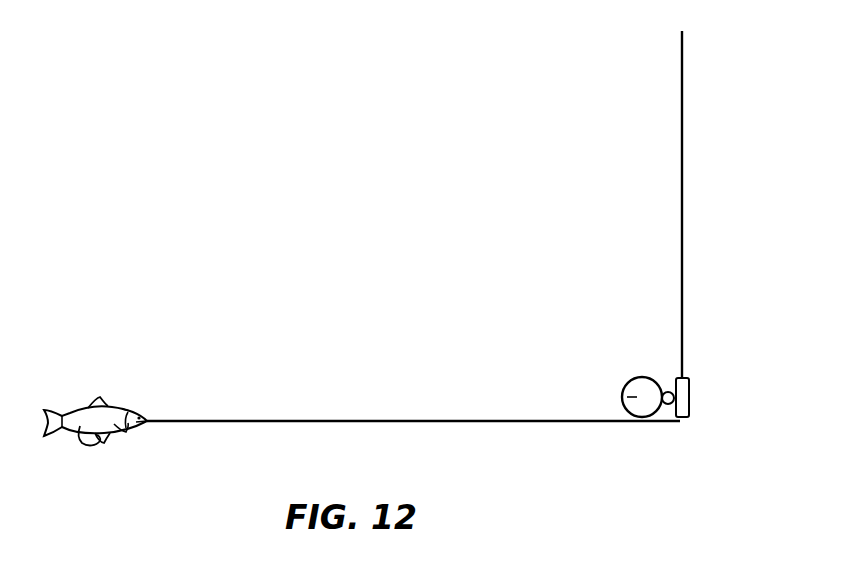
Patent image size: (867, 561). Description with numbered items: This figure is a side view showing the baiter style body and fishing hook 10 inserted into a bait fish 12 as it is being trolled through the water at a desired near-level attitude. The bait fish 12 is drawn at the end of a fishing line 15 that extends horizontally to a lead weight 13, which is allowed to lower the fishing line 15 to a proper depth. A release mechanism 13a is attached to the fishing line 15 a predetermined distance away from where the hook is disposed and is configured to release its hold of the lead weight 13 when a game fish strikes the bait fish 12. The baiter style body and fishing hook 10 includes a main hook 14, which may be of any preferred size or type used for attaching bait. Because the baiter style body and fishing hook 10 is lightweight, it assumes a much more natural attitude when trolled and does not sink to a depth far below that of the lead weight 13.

The baiter style body and fishing hook 10 is at (77, 397).
The bait fish 12 is at (122, 409).
The lead weight 13 is at (626, 395).
The release mechanism 13a is at (689, 400).
The main hook 14 is at (67, 449).
The fishing line 15 is at (345, 420).